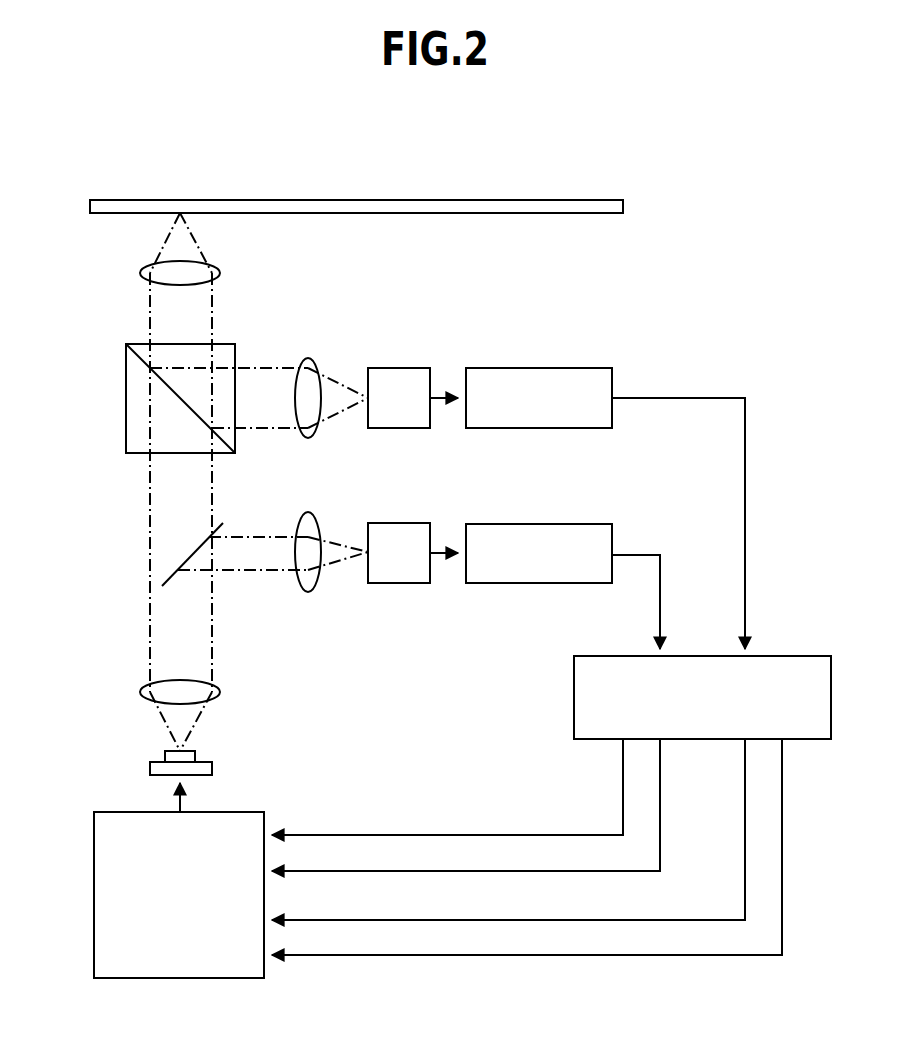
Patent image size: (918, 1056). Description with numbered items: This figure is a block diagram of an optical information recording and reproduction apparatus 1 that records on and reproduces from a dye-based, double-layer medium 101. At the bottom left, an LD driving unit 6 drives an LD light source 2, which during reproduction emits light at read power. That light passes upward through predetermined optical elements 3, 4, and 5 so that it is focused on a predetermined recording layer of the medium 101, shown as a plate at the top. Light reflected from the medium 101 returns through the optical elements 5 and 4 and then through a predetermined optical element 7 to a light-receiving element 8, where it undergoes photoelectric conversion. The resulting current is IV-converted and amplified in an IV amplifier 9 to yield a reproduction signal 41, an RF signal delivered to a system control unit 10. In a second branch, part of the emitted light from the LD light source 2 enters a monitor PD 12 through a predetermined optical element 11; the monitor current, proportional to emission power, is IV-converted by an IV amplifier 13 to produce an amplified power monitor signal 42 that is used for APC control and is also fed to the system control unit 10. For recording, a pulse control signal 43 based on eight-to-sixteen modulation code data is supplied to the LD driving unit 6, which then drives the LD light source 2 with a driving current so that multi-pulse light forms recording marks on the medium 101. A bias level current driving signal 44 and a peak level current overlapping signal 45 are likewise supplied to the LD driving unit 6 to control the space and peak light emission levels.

The optical information recording and reproduction apparatus 1 is at (770, 204).
The medium 101 is at (406, 200).
The LD light source 2 is at (150, 771).
The optical element 3 is at (140, 694).
The optical element 4 is at (126, 402).
The optical element 5 is at (140, 274).
The LD driving unit 6 is at (94, 898).
The optical element 7 is at (306, 356).
The light-receiving element 8 is at (400, 368).
The IV amplifier 9 is at (529, 368).
The system control unit 10 is at (574, 716).
The optical element 11 is at (307, 593).
The monitor PD 12 is at (403, 583).
The IV amplifier 13 is at (530, 583).
The reproduction signal 41 is at (689, 398).
The power monitor signal 42 is at (642, 555).
The pulse control signal 43 is at (660, 800).
The bias level current driving signal 44 is at (528, 921).
The peak level current overlapping signal 45 is at (452, 956).